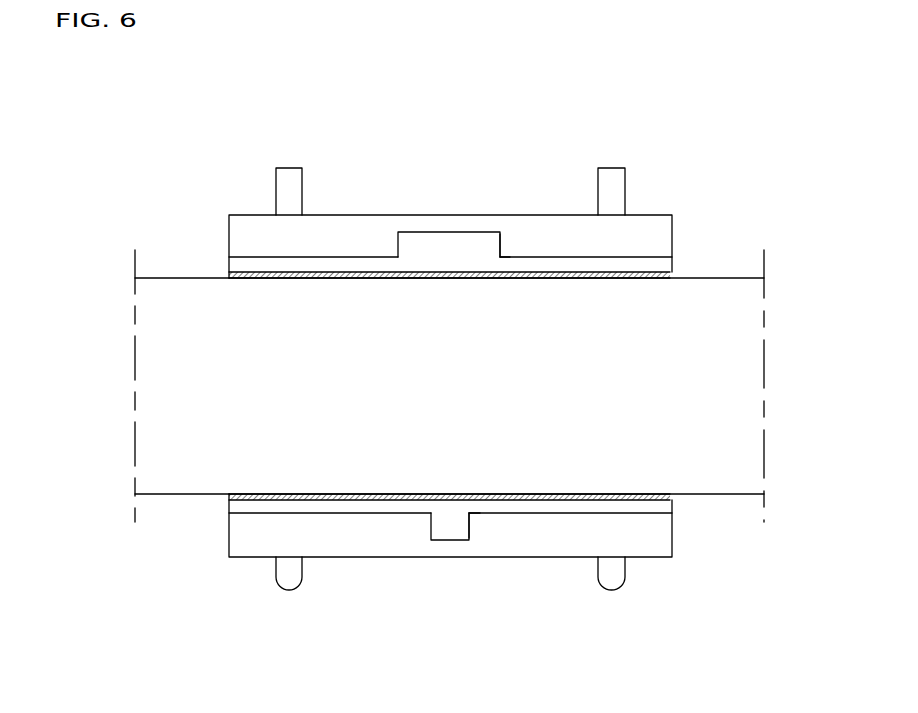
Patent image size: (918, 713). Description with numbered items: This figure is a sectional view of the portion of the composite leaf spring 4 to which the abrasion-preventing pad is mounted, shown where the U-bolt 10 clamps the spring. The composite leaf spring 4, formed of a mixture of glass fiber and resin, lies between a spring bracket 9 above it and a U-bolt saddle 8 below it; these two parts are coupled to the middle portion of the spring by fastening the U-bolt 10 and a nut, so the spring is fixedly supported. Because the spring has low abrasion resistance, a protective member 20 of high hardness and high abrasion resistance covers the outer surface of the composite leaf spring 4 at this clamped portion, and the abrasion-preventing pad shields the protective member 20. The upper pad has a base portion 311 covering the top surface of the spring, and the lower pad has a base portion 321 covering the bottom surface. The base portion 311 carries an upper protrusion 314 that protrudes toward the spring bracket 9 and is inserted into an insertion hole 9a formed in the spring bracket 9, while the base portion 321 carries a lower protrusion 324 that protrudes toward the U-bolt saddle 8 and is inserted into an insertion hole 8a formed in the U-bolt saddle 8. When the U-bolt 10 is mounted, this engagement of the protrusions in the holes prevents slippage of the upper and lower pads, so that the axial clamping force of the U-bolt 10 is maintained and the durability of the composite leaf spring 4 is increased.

The composite leaf spring 4 is at (745, 388).
The protective member 20 is at (293, 279).
The spring bracket 9 is at (345, 217).
The upper protrusion 314 is at (447, 243).
The insertion hole 9a is at (502, 252).
The base portion 311 is at (647, 265).
The U-bolt 10 is at (286, 180).
The U-bolt saddle 8 is at (367, 530).
The lower protrusion 324 is at (447, 527).
The insertion hole 8a is at (468, 523).
The base portion 321 is at (638, 507).